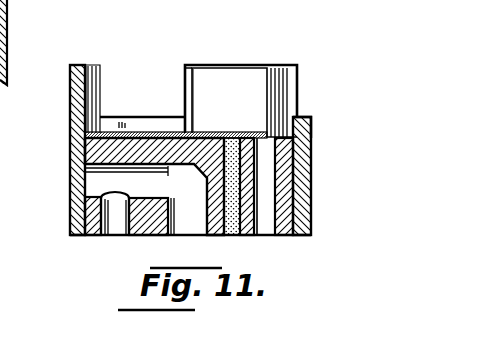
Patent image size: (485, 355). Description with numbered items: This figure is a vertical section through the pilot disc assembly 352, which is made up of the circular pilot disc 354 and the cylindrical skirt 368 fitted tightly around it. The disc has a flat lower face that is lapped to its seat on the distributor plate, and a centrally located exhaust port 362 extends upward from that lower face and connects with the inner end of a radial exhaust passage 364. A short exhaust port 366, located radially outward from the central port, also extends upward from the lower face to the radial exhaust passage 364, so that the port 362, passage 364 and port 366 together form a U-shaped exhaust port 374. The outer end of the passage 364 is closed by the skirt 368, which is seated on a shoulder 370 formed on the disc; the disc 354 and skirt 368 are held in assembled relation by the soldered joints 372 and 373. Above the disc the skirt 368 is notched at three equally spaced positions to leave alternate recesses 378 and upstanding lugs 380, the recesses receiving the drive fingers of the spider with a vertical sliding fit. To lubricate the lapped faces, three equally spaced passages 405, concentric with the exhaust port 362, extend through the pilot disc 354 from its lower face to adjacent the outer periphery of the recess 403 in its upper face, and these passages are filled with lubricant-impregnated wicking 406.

The pilot disc assembly 352 is at (303, 80).
The pilot disc 354 is at (285, 222).
The exhaust port 362 is at (193, 223).
The radial exhaust passage 364 is at (117, 153).
The short exhaust port 366 is at (113, 226).
The cylindrical skirt 368 is at (70, 117).
The shoulder 370 is at (83, 218).
The soldered joint 372 is at (310, 208).
The soldered joint 373 is at (309, 138).
The U-shaped exhaust port 374 is at (110, 180).
The recess 378 is at (185, 72).
The upstanding lug 380 is at (70, 72).
The recess 403 is at (205, 135).
The lubricating passage 405 is at (233, 136).
The lubricant-impregnated wicking 406 is at (228, 225).